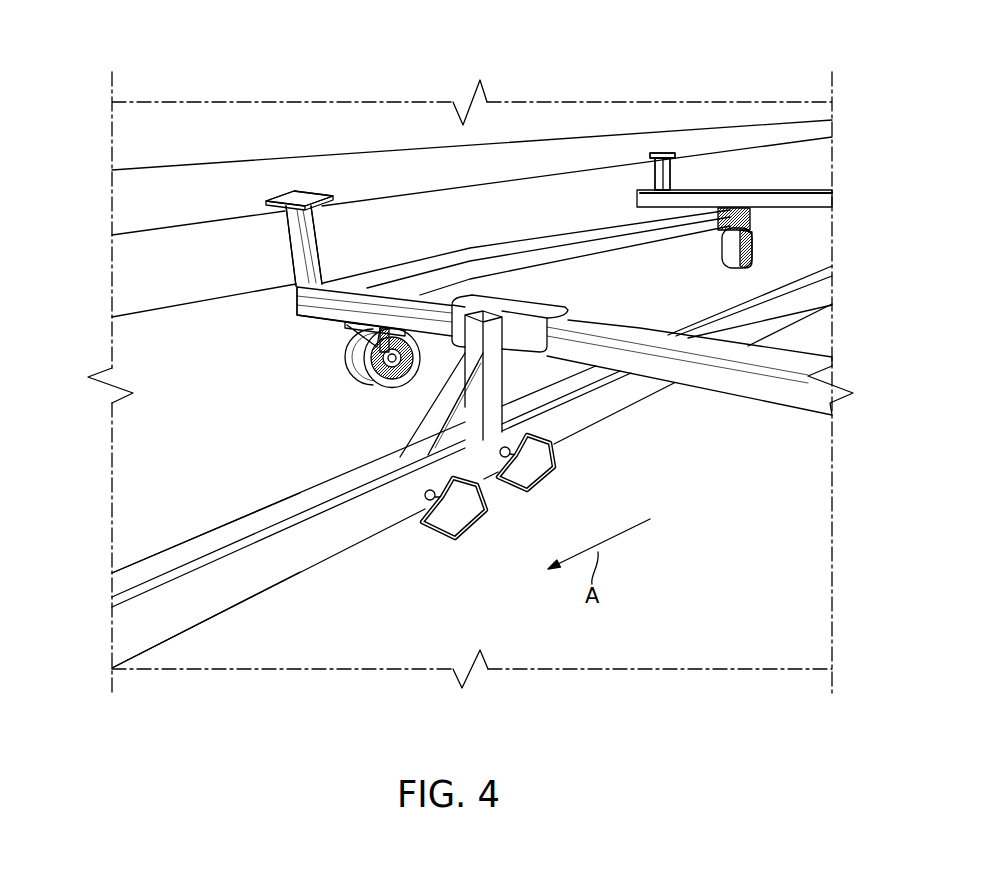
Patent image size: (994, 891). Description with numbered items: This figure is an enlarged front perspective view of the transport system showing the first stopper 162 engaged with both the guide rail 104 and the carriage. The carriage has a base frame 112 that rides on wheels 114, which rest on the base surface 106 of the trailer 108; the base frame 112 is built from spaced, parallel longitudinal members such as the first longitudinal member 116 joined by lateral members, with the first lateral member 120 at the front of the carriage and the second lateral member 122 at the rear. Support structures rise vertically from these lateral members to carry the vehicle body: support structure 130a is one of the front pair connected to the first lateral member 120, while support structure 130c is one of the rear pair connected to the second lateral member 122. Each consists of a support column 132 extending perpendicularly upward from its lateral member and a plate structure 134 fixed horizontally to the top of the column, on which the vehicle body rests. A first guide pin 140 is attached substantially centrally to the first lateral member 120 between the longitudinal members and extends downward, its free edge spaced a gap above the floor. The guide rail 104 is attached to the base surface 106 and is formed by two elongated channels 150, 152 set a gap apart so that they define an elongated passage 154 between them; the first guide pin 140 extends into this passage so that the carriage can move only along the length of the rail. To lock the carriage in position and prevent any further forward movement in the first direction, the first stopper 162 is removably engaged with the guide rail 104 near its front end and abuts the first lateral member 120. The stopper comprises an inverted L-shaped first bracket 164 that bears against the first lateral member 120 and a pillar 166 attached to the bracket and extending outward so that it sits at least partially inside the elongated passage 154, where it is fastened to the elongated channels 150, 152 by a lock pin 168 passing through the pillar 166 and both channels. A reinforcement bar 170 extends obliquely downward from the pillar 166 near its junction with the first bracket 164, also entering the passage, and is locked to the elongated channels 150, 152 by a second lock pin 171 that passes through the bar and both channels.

The guide rail 104 is at (158, 630).
The base surface 106 is at (765, 628).
The trailer 108 is at (137, 136).
The base frame 112 is at (797, 391).
The wheels 114 is at (755, 228).
The first longitudinal member 116 is at (515, 241).
The first lateral member 120 is at (780, 372).
The second lateral member 122 is at (820, 200).
The support structure 130a is at (297, 193).
The support structure 130c is at (657, 152).
The support column 132 is at (290, 240).
The plate structure 134 is at (307, 194).
The first guide pin 140 is at (567, 322).
The elongated channel 150 is at (150, 554).
The elongated channel 152 is at (320, 548).
The elongated passage 154 is at (203, 538).
The first stopper 162 is at (490, 372).
The first bracket 164 is at (537, 335).
The pillar 166 is at (298, 300).
The lock pin 168 is at (553, 470).
The reinforcement bar 170 is at (435, 420).
The lock pin 171 is at (450, 538).